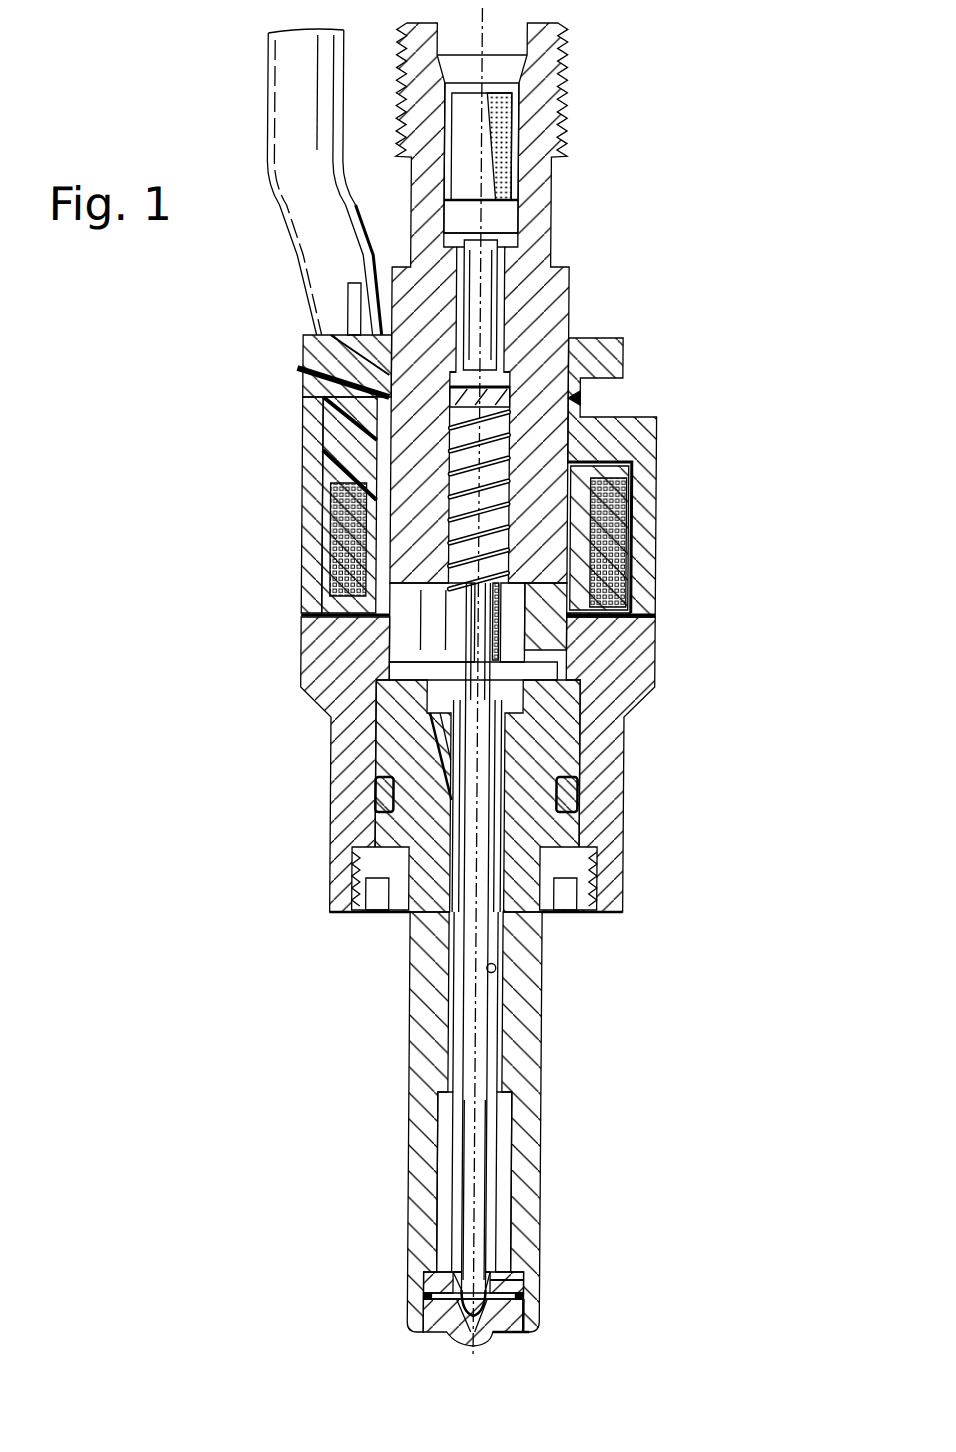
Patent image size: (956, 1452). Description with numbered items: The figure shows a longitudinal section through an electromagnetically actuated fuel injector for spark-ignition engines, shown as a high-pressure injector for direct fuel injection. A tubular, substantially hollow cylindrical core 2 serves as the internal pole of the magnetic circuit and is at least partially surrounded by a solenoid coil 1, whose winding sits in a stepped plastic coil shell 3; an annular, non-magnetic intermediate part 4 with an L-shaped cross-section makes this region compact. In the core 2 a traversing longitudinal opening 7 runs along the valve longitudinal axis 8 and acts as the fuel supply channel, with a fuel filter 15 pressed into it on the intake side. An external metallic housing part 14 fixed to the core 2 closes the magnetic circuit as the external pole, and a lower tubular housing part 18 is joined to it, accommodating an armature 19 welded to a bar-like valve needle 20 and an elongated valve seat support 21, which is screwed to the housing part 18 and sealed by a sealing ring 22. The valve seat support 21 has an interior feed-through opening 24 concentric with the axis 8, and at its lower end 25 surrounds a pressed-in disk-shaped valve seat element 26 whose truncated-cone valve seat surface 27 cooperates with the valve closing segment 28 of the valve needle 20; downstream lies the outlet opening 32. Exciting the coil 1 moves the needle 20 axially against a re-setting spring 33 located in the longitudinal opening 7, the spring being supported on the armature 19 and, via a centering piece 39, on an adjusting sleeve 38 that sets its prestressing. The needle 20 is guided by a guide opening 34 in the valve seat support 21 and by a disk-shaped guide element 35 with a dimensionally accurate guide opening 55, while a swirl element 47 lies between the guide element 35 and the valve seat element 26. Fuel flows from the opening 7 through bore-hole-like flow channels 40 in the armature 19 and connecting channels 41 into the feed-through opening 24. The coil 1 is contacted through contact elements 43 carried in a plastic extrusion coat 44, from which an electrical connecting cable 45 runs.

The solenoid coil 1 is at (330, 520).
The core 2 is at (553, 277).
The coil shell 3 is at (636, 490).
The intermediate part 4 is at (632, 545).
The longitudinal opening 7 is at (585, 398).
The valve longitudinal axis 8 is at (485, 1130).
The housing part 14 is at (640, 442).
The fuel filter 15 is at (517, 110).
The lower housing part 18 is at (610, 728).
The armature 19 is at (405, 635).
The valve needle 20 is at (470, 1020).
The valve seat support 21 is at (545, 1010).
The sealing ring 22 is at (388, 788).
The feed-through opening 24 is at (501, 972).
The lower end 25 is at (535, 1322).
The valve seat element 26 is at (420, 1315).
The valve seat surface 27 is at (445, 1278).
The valve closing segment 28 is at (525, 1300).
The outlet opening 32 is at (435, 1295).
The re-setting spring 33 is at (325, 407).
The guide opening 34 is at (500, 747).
The guide element 35 is at (510, 1270).
The adjusting sleeve 38 is at (510, 291).
The centering piece 39 is at (502, 380).
The flow channels 40 is at (522, 635).
The connecting channels 41 is at (445, 740).
The contact elements 43 is at (349, 298).
The plastic extrusion coat 44 is at (316, 367).
The electrical connecting cable 45 is at (282, 80).
The swirl element 47 is at (520, 1285).
The guide opening 55 is at (490, 1248).